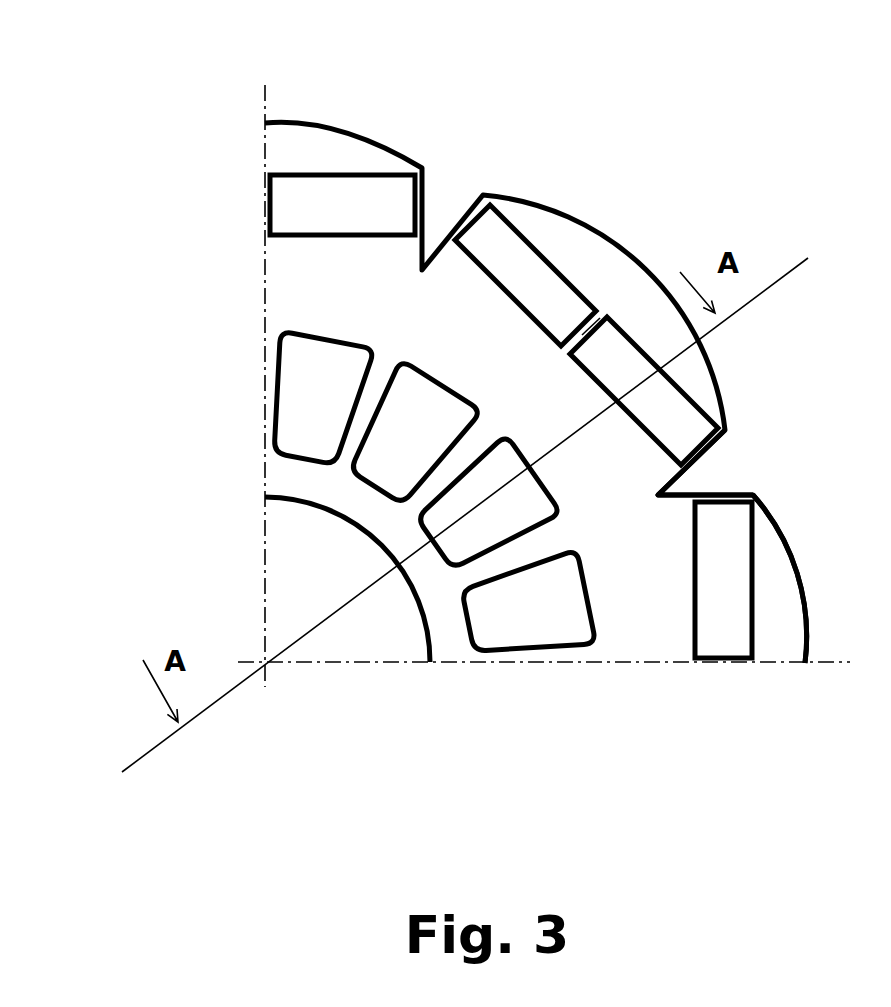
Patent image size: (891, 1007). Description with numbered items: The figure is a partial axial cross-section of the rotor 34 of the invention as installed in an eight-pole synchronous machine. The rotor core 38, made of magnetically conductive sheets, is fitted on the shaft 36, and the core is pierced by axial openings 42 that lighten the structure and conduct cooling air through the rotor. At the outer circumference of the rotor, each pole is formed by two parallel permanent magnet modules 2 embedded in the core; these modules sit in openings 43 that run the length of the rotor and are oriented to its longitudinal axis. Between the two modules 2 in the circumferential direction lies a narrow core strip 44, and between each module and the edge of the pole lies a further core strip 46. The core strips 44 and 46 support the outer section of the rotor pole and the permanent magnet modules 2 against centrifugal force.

The permanent magnet module 2 is at (382, 207).
The rotor 34 is at (755, 342).
The shaft 36 is at (383, 623).
The rotor core 38 is at (638, 595).
The openings 42 is at (522, 610).
The openings 43 is at (340, 174).
The narrow core strip 44 is at (607, 318).
The core strip 46 is at (727, 491).